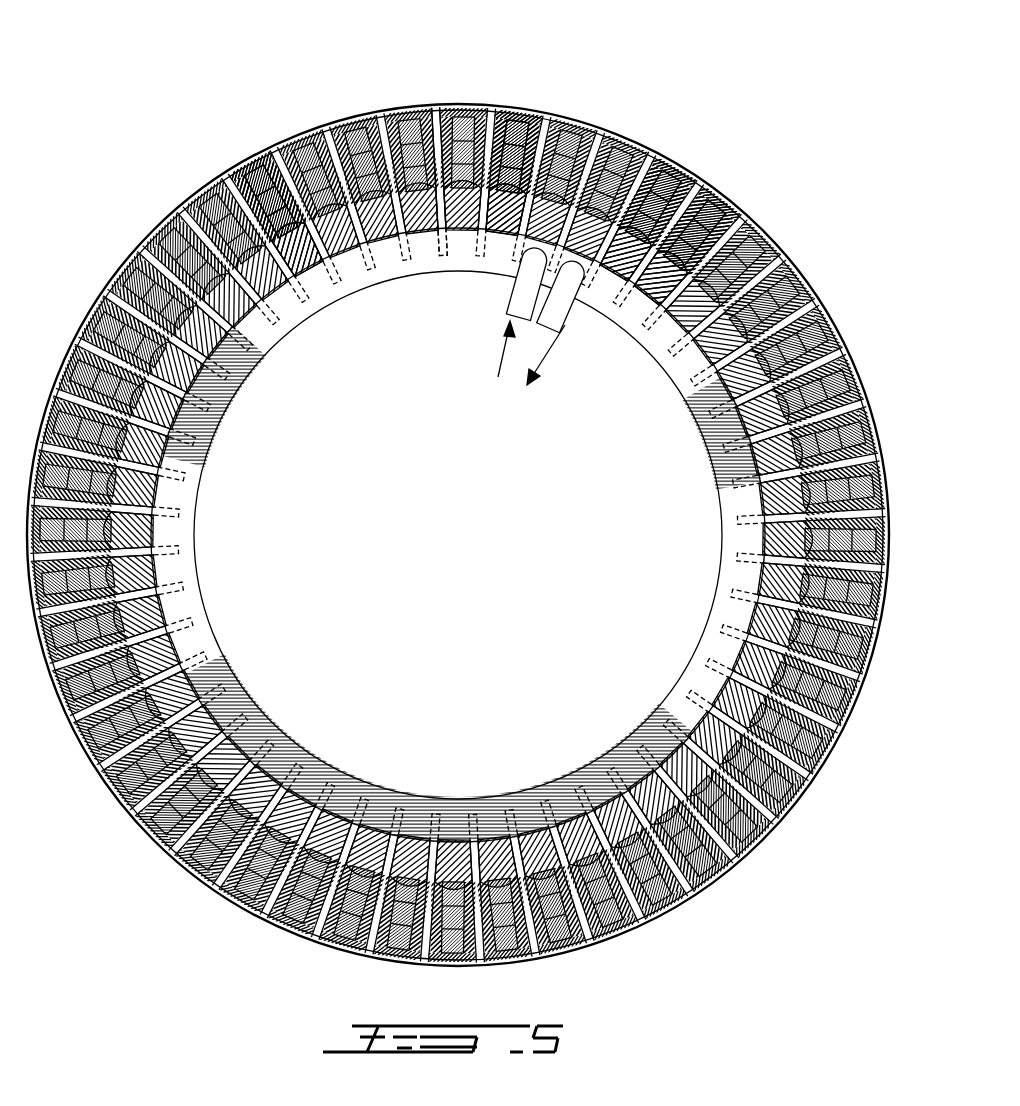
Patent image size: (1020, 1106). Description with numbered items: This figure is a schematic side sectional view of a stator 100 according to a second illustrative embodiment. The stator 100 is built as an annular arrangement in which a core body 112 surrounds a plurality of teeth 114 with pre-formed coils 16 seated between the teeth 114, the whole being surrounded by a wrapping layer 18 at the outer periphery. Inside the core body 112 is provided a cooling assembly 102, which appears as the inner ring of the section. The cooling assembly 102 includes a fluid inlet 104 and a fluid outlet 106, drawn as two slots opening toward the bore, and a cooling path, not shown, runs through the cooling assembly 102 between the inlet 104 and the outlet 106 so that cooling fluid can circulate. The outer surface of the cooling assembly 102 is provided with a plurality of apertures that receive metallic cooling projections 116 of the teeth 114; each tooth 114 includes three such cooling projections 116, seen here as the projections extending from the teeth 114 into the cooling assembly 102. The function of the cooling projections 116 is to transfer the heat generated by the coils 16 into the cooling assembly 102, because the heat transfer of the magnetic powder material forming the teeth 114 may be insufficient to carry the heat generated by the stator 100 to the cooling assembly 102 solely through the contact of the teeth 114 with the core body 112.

The stator 100 is at (464, 512).
The cooling assembly 102 is at (217, 402).
The fluid inlet 104 is at (507, 300).
The fluid outlet 106 is at (560, 323).
The core body 112 is at (330, 238).
The teeth 114 is at (290, 150).
The metallic cooling projections 116 is at (713, 267).
The pre-formed coils 16 is at (503, 110).
The wrapping layer 18 is at (398, 108).